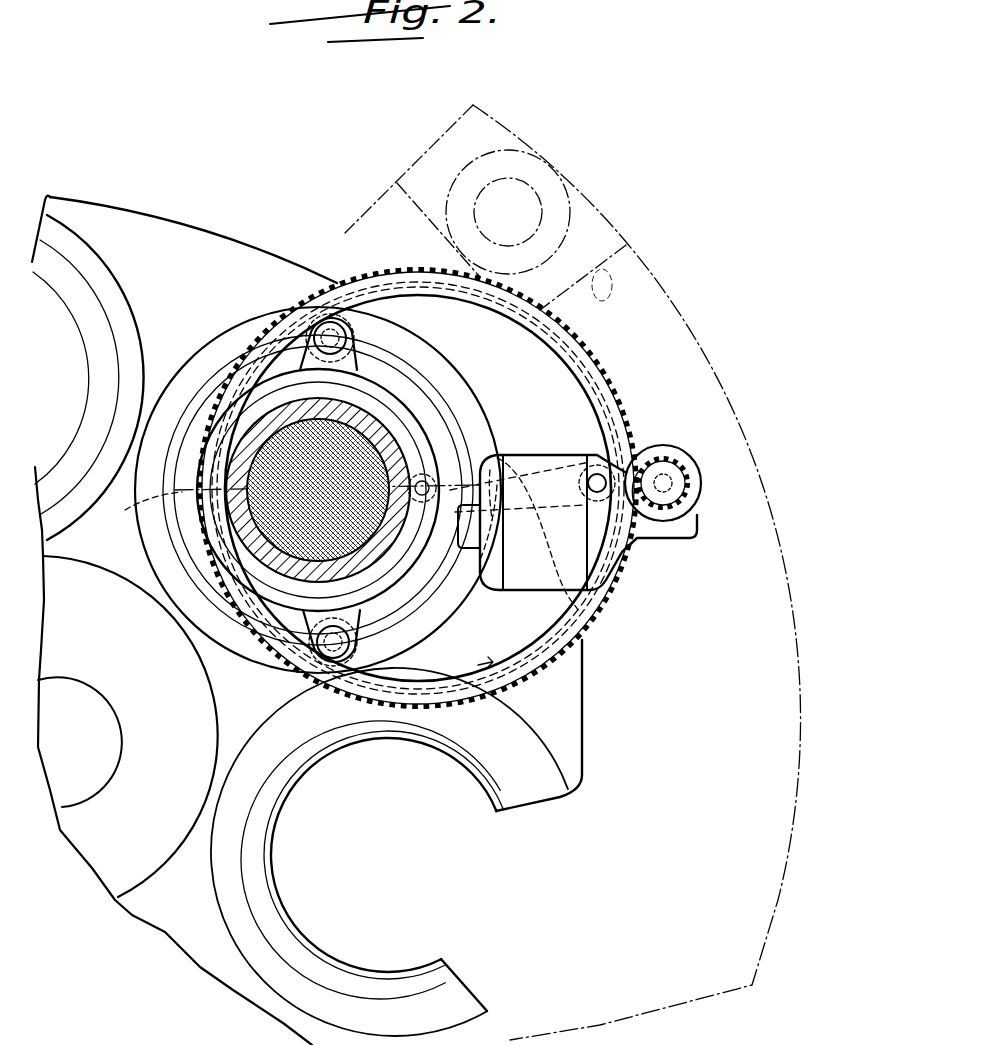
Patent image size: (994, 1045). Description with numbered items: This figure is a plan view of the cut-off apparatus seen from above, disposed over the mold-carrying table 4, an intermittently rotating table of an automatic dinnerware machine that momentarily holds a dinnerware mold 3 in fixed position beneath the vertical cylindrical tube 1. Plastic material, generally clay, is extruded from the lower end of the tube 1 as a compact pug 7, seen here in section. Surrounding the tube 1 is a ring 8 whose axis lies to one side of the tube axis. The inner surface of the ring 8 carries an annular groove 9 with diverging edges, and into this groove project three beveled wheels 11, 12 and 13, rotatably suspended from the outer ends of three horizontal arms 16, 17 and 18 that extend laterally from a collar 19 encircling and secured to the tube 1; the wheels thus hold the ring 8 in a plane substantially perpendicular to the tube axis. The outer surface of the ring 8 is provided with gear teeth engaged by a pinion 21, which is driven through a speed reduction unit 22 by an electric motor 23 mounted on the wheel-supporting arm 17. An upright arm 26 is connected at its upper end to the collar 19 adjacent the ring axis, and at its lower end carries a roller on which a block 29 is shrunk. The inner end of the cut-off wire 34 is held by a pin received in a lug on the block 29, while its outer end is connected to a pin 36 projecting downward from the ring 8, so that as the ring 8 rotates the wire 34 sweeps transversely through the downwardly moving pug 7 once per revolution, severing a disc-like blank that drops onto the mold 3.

The cylindrical tube 1 is at (336, 400).
The dinnerware mold 3 is at (182, 522).
The intermittently rotating table 4 is at (216, 243).
The pug 7 is at (279, 428).
The ring 8 is at (638, 425).
The annular groove 9 is at (600, 393).
The wheel 11 is at (378, 650).
The wheel 12 is at (586, 462).
The wheel 13 is at (353, 320).
The horizontal arm 16 is at (352, 618).
The horizontal arm 17 is at (470, 453).
The horizontal arm 18 is at (292, 362).
The collar 19 is at (387, 400).
The pinion 21 is at (680, 453).
The speed reduction unit 22 is at (702, 470).
The electric motor 23 is at (530, 578).
The upright arm 26 is at (427, 447).
The block 29 is at (414, 516).
The cut-off wire 34 is at (318, 490).
The pin 36 is at (138, 510).